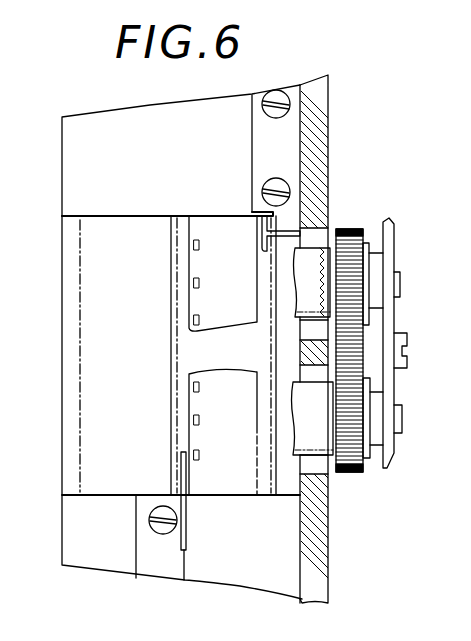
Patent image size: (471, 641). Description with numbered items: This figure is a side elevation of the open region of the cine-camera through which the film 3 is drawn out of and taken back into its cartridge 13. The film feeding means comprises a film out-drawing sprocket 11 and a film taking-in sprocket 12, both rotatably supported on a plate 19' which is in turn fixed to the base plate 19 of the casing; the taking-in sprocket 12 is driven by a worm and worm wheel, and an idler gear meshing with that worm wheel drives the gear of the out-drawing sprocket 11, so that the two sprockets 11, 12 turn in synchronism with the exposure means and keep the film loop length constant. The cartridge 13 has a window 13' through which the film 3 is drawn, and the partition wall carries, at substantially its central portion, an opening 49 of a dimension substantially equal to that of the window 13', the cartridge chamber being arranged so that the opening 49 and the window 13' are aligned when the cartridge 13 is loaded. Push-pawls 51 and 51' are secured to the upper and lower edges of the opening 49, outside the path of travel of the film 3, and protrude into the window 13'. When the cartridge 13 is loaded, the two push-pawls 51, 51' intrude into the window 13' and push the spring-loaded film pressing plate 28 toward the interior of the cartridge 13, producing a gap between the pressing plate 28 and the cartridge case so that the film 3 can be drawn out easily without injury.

The film 3 is at (212, 215).
The film out-drawing sprocket 11 is at (351, 232).
The film taking-in sprocket 12 is at (349, 472).
The cartridge 13 is at (156, 342).
The window 13' is at (139, 355).
The base plate 19 is at (324, 335).
The plate 19' is at (422, 343).
The film pressing plate 28 is at (176, 284).
The opening 49 is at (152, 387).
The push-pawl 51 is at (316, 213).
The push-pawl 51' is at (157, 506).